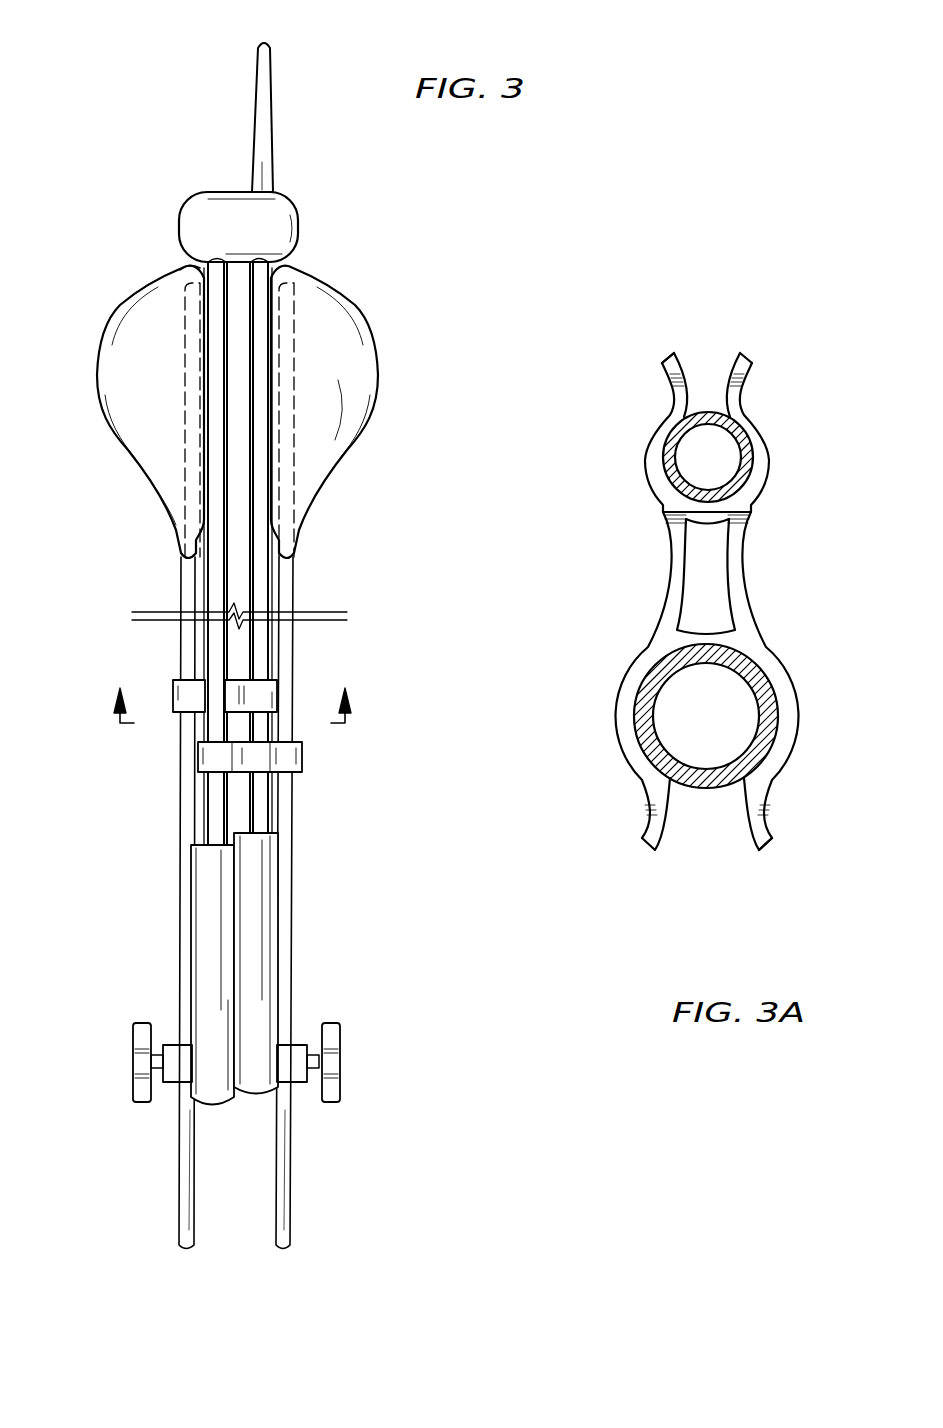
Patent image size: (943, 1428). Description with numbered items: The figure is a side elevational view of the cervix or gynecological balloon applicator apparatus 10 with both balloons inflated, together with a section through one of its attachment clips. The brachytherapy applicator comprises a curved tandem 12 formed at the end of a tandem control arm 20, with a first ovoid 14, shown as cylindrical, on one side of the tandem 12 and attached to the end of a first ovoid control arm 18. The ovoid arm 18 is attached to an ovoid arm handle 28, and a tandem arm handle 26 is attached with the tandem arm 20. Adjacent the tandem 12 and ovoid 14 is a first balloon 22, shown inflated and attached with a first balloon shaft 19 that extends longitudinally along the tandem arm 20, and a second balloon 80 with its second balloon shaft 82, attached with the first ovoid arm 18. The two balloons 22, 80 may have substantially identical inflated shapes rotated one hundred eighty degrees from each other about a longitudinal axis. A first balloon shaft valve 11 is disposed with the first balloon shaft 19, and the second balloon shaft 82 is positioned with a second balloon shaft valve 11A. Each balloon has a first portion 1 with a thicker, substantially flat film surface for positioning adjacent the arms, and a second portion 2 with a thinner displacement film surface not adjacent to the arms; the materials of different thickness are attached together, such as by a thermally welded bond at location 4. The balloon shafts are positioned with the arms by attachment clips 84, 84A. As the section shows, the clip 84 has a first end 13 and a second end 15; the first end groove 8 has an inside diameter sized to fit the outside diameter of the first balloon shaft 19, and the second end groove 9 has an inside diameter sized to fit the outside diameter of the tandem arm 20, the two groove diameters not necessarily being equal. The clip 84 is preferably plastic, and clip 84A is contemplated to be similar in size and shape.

In FIG. 3, the first portion 1 is at (190, 538).
In FIG. 3, the second portion 2 is at (97, 393).
In FIG. 3, the thermally welded bond location 4 is at (197, 263).
In FIG. 3A, the first end groove 8 is at (750, 456).
In FIG. 3A, the second end groove 9 is at (688, 688).
In FIG. 3, the gynecological balloon applicator apparatus 10 is at (116, 769).
In FIG. 3, the first balloon shaft valve 11 is at (166, 1067).
In FIG. 3, the second balloon shaft valve 11A is at (298, 1058).
In FIG. 3, the curved tandem 12 is at (276, 110).
In FIG. 3A, the first end 13 is at (688, 366).
In FIG. 3, the first ovoid 14 is at (297, 206).
In FIG. 3A, the second end 15 is at (741, 830).
In FIG. 3, the first ovoid control arm 18 is at (204, 584).
In FIG. 3, the first balloon shaft 19 is at (180, 645).
In FIG. 3A, the first balloon shaft 19 is at (745, 397).
In FIG. 3, the tandem control arm 20 is at (272, 588).
In FIG. 3A, the tandem control arm 20 is at (669, 778).
In FIG. 3, the first balloon 22 is at (158, 492).
In FIG. 3, the tandem arm handle 26 is at (272, 905).
In FIG. 3, the ovoid arm handle 28 is at (196, 887).
In FIG. 3, the second balloon 80 is at (350, 453).
In FIG. 3, the second balloon shaft 82 is at (294, 655).
In FIG. 3, the attachment clip 84 is at (176, 700).
In FIG. 3A, the attachment clip 84 is at (652, 424).
In FIG. 3, the attachment clip 84A is at (290, 757).